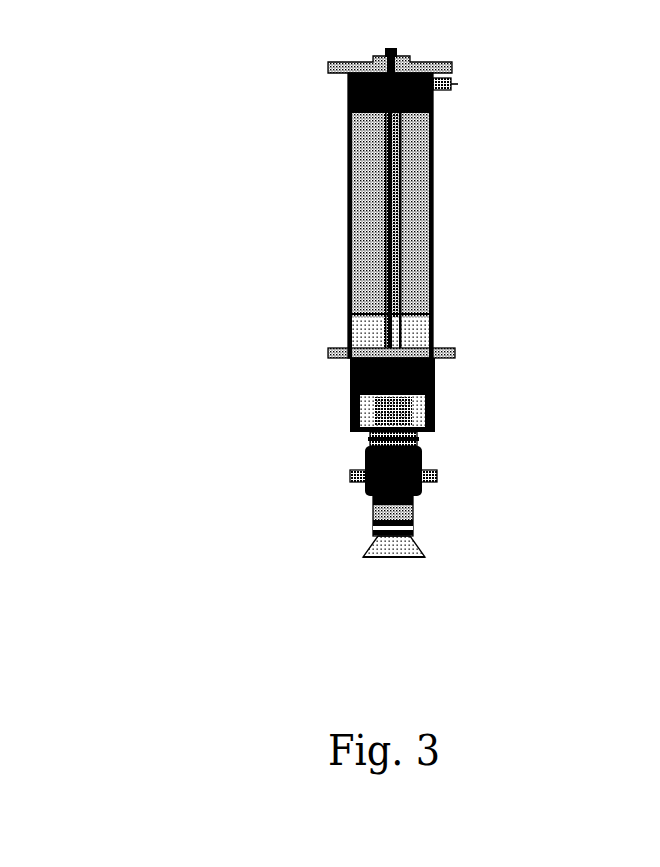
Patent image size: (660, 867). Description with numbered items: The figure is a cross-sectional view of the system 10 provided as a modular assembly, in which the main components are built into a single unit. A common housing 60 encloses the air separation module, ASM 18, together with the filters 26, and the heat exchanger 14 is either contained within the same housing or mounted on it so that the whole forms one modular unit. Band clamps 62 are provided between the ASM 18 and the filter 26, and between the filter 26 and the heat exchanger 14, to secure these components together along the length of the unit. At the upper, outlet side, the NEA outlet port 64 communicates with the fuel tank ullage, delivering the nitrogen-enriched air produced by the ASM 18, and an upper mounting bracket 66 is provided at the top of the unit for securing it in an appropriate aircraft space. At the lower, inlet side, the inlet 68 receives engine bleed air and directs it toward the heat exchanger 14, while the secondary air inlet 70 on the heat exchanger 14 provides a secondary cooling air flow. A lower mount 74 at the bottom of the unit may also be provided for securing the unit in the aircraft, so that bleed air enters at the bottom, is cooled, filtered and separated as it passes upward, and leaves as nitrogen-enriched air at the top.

The system 10 is at (200, 227).
The upper mounting bracket 66 is at (306, 73).
The NEA outlet port 64 is at (441, 85).
The common housing 60 is at (435, 157).
The ASM 18 is at (435, 242).
The band clamps 62 is at (372, 437).
The filters 26 is at (435, 370).
The heat exchanger 14 is at (437, 474).
The secondary air inlet 70 is at (352, 476).
The lower mount 74 is at (376, 548).
The inlet 68 is at (390, 547).